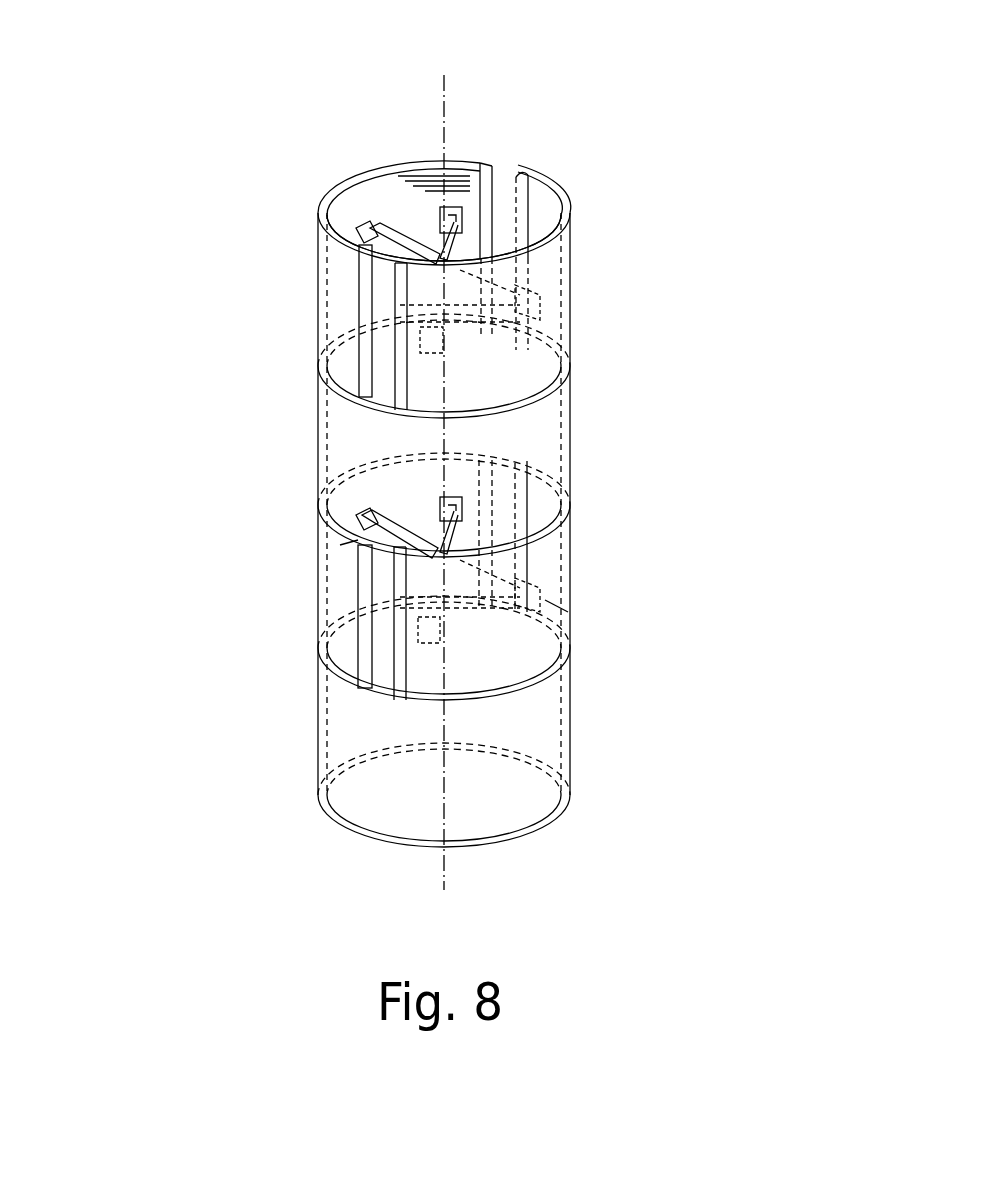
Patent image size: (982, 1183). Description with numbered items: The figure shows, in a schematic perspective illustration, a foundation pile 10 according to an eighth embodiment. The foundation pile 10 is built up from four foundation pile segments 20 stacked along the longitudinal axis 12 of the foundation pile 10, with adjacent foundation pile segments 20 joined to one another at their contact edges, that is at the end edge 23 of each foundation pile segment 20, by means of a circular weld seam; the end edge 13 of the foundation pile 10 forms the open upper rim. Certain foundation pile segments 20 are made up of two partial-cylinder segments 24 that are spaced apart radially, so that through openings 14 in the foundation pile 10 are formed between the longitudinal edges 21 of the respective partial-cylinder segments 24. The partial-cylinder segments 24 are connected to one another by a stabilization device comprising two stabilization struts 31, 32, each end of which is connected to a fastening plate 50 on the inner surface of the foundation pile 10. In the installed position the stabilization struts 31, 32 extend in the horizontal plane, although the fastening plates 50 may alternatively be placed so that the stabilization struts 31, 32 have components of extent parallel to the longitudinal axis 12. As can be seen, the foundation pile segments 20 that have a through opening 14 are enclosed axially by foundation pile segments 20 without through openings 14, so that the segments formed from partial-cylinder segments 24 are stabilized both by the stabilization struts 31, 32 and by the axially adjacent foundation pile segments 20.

The foundation pile 10 is at (584, 148).
The longitudinal axis 12 is at (441, 108).
The end edge 13 is at (372, 170).
The end edge 23 is at (372, 170).
The through opening 14 is at (387, 315).
The foundation pile segment 20 is at (618, 255).
The longitudinal edge 21 is at (505, 165).
The partial-cylinder segment 24 is at (335, 540).
The stabilization strut 31 is at (382, 298).
The stabilization strut 32 is at (520, 222).
The fastening plate 50 is at (365, 230).